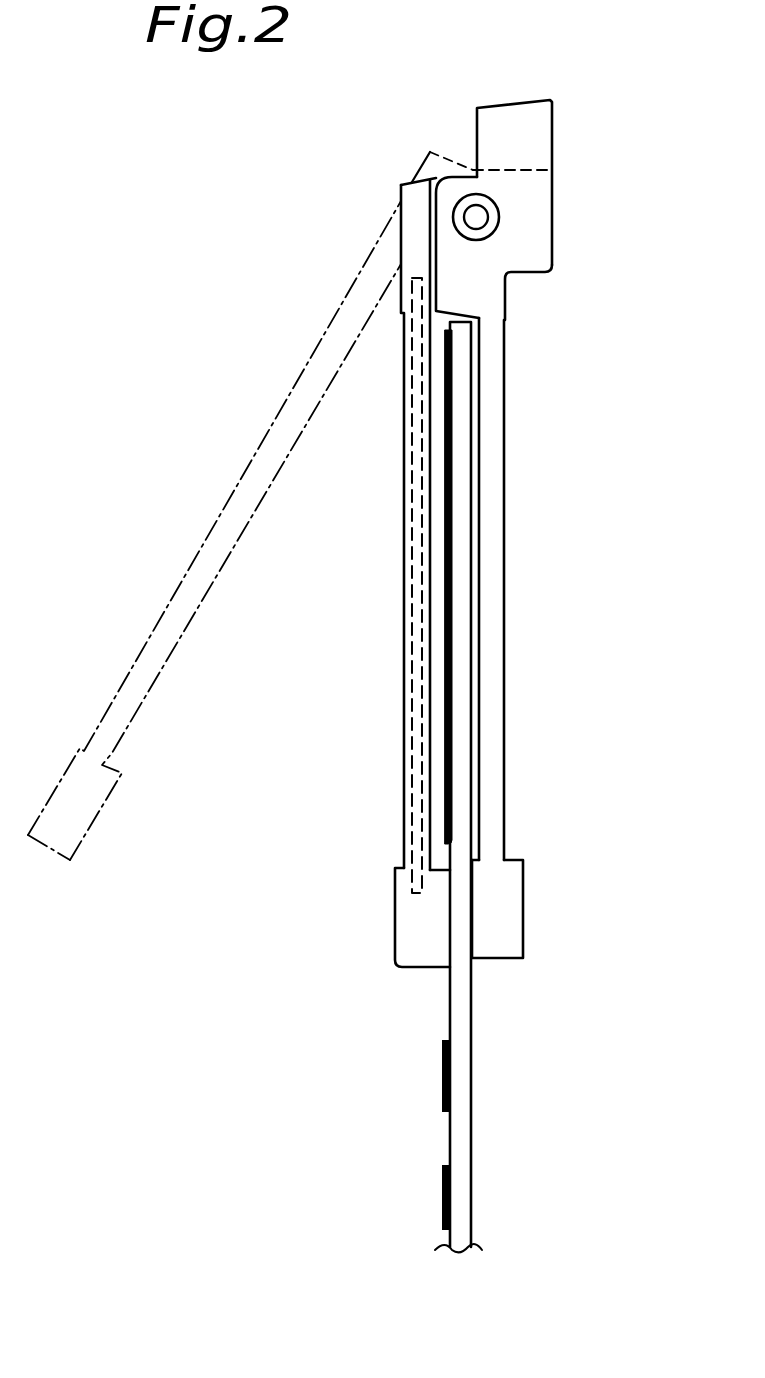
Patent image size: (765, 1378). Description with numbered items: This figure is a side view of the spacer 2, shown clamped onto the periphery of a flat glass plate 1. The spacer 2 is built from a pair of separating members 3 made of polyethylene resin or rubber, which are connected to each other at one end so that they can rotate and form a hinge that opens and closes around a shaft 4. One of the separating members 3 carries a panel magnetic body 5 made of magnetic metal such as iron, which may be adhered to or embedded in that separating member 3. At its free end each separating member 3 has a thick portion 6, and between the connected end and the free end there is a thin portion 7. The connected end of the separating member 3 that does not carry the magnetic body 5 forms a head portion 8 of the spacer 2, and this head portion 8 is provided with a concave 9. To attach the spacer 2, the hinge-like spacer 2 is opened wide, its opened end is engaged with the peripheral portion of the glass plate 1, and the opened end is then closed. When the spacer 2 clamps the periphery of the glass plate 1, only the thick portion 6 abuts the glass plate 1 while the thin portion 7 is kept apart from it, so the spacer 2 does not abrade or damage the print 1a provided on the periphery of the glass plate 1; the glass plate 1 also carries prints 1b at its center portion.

The glass plate 1 is at (458, 1018).
The print 1a is at (447, 497).
The prints 1b is at (441, 1072).
The spacer 2 is at (270, 381).
The separating members 3 is at (398, 693).
The shaft 4 is at (478, 217).
The panel magnetic body 5 is at (415, 598).
The thick portion 6 is at (422, 927).
The thin portion 7 is at (490, 580).
The head portion 8 is at (525, 240).
The concave 9 is at (533, 137).